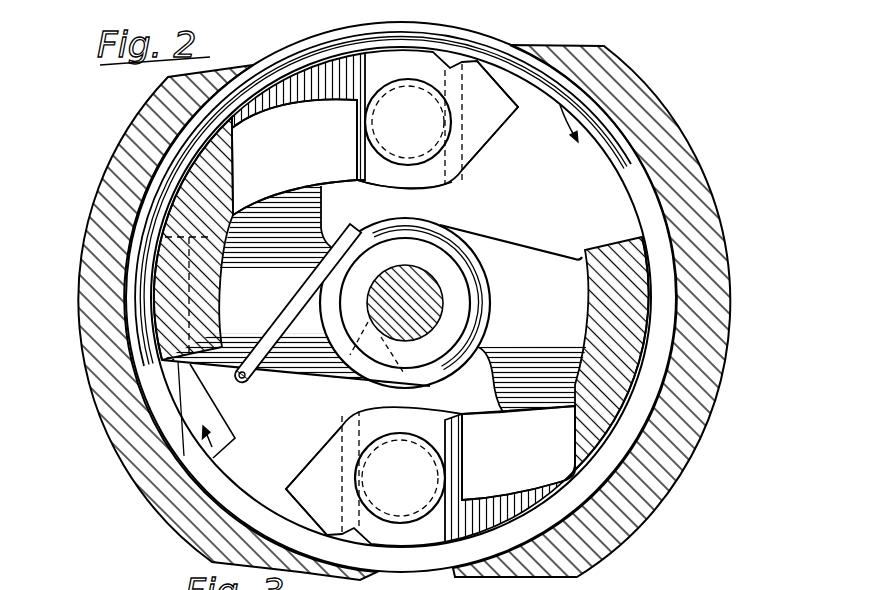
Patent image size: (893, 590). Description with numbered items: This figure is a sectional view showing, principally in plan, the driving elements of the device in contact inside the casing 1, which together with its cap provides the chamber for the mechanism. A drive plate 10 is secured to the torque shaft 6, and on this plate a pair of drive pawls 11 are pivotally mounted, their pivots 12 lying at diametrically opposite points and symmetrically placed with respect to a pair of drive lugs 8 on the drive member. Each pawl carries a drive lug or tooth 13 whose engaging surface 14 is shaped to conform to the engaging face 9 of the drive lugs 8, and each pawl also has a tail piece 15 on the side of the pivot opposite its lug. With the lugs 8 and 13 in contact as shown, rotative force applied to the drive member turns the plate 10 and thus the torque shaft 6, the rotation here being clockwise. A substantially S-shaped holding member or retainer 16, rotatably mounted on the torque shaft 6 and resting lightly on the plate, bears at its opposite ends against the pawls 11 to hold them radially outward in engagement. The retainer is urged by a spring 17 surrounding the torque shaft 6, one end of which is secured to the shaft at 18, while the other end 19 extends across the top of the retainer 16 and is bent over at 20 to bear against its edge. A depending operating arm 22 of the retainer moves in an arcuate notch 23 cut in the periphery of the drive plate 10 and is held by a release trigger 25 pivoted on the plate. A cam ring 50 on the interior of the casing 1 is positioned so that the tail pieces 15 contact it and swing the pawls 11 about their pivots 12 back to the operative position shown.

The casing 1 is at (713, 227).
The cam ring 50 is at (296, 52).
The drive lugs or teeth 8 is at (186, 207).
The engaging face 9 is at (218, 158).
The engaging surface 14 is at (233, 172).
The drive lug or tooth 13 is at (336, 166).
The drive pawls 11 is at (430, 58).
The pivots 12 is at (403, 301).
The tail piece 15 is at (484, 140).
The drive plate 10 is at (548, 188).
The holding member or retainer 16 is at (503, 248).
The spring 17 is at (481, 313).
The torque shaft 6 is at (427, 281).
The spring end securement 18 is at (412, 382).
The other end of spring 19 is at (298, 303).
The bent-over portion 20 is at (245, 382).
The depending operating arm 22 is at (187, 327).
The arcuate notch 23 is at (198, 411).
The release trigger 25 is at (196, 408).